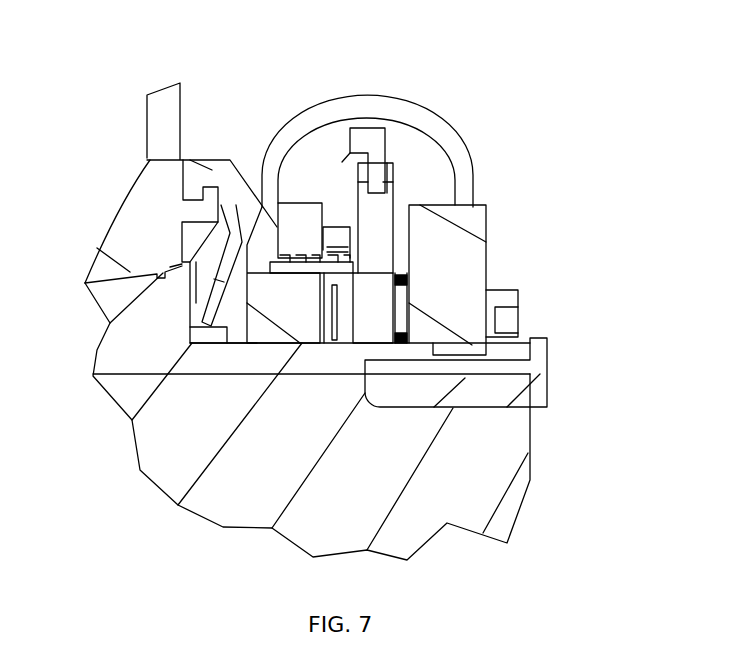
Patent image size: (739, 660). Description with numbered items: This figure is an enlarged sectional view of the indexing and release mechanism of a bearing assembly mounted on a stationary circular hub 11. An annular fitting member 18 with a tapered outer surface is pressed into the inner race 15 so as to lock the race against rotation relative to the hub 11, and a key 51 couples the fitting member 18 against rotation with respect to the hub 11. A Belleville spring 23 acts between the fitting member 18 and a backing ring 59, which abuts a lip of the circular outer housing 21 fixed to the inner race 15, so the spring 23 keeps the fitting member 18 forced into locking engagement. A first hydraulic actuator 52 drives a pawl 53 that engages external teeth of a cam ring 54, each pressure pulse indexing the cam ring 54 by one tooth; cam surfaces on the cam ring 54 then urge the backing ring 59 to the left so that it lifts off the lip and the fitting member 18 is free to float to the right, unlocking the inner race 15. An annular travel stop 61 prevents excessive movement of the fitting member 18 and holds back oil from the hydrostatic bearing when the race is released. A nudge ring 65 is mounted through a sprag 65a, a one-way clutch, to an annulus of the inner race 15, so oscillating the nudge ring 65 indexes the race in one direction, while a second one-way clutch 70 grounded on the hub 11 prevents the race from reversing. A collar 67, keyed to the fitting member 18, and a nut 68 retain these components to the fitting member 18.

The hub 11 is at (498, 487).
The inner race 15 is at (122, 218).
The fitting member 18 is at (122, 340).
The outer housing 21 is at (230, 160).
The Belleville spring 23 is at (240, 226).
The key 51 is at (537, 396).
The first hydraulic actuator 52 is at (443, 134).
The pawl 53 is at (382, 212).
The cam ring 54 is at (392, 310).
The backing ring 59 is at (297, 317).
The annular travel stop 61 is at (193, 235).
The nudge ring 65 is at (320, 235).
The sprag 65a is at (300, 203).
The collar 67 is at (467, 258).
The nut 68 is at (512, 298).
The second one-way clutch 70 is at (333, 205).